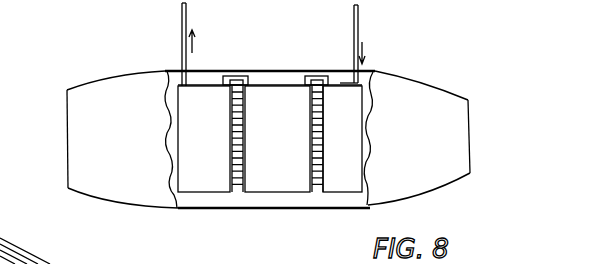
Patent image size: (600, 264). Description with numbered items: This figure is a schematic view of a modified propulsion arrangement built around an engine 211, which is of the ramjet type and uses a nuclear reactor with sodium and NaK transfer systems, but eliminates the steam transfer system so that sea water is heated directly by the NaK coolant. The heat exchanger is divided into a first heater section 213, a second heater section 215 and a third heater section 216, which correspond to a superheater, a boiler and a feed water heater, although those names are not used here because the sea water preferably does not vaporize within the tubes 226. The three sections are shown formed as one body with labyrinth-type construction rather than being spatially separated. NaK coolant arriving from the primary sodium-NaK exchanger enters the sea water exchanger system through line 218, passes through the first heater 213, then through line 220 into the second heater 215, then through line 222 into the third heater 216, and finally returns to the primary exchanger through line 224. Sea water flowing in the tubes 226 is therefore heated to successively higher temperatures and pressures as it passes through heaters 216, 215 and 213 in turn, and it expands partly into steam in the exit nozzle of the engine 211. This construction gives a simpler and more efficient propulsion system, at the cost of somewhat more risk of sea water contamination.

The engine 211 is at (170, 212).
The first heater section 213 is at (355, 150).
The second heater section 215 is at (288, 150).
The third heater section 216 is at (217, 150).
The line 218 is at (357, 37).
The line 220 is at (312, 76).
The line 222 is at (230, 76).
The line 224 is at (182, 20).
The tubes 226 is at (312, 170).